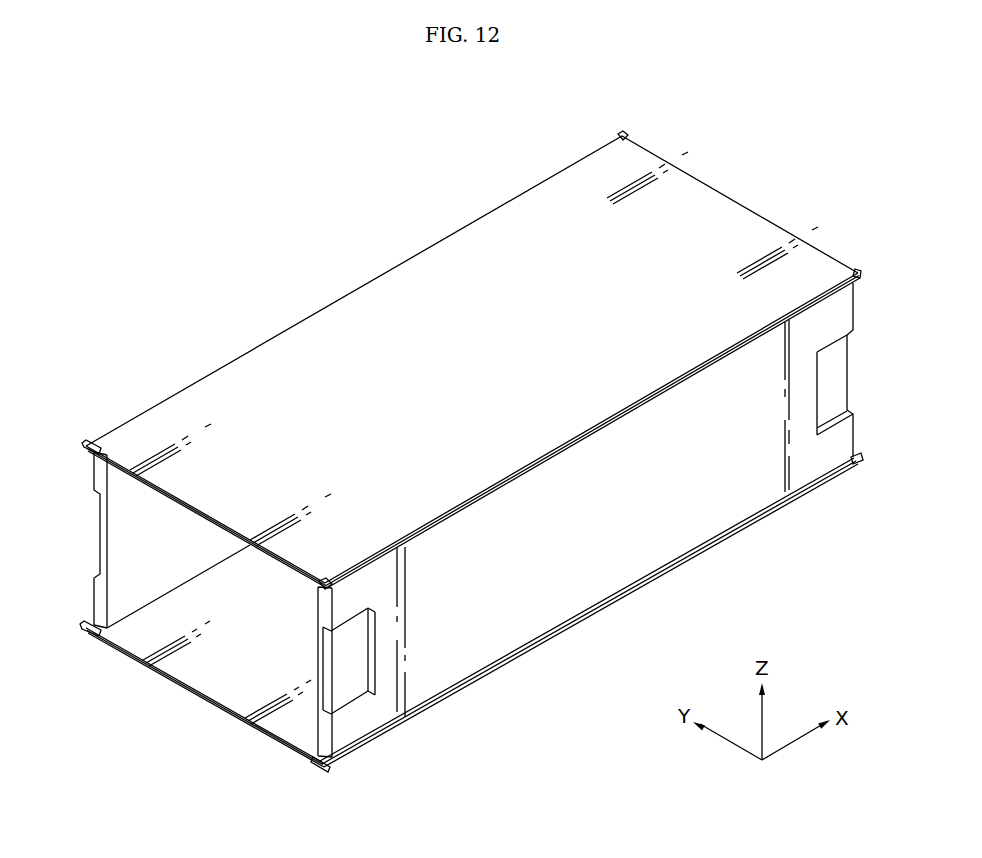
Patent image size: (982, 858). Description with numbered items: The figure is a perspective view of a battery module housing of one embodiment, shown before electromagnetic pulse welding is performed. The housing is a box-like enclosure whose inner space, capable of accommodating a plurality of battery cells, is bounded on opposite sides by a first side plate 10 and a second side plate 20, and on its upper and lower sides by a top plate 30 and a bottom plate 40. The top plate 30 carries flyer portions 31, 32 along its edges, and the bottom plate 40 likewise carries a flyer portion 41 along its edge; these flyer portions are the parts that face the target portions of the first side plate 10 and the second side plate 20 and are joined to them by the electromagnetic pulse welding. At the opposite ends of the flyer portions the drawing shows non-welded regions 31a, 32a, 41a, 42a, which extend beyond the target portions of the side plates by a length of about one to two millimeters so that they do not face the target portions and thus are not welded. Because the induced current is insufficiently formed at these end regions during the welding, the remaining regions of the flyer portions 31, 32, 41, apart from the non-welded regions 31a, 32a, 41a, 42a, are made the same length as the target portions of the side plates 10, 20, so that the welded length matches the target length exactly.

The first side plate 10 is at (708, 565).
The second side plate 20 is at (78, 511).
The top plate 30 is at (286, 311).
The flyer portion 31 is at (818, 292).
The non-welded region 31a is at (859, 271).
The flyer portion 32 is at (377, 280).
The non-welded region 32a is at (622, 137).
The bottom plate 40 is at (178, 702).
The flyer portion 41 is at (585, 622).
The non-welded region 41a is at (320, 768).
The non-welded region 42a is at (85, 634).